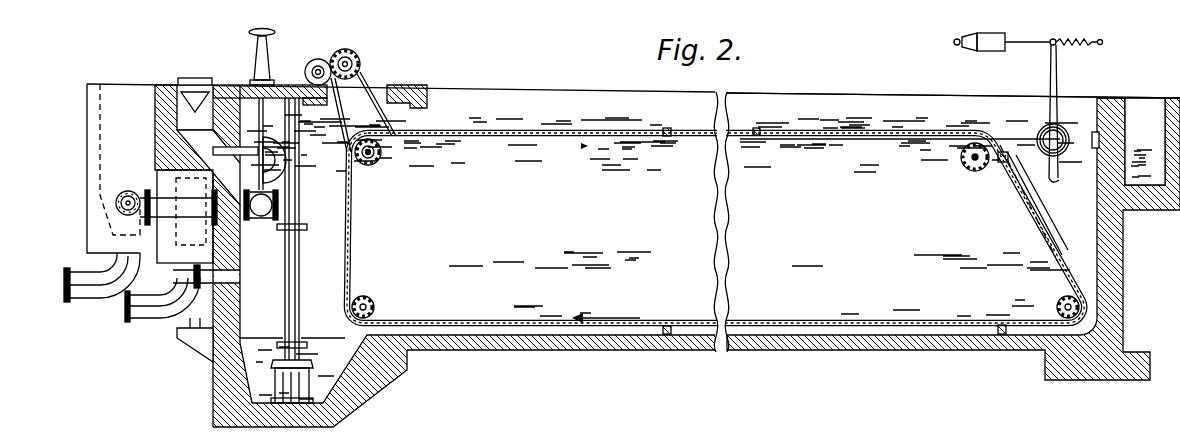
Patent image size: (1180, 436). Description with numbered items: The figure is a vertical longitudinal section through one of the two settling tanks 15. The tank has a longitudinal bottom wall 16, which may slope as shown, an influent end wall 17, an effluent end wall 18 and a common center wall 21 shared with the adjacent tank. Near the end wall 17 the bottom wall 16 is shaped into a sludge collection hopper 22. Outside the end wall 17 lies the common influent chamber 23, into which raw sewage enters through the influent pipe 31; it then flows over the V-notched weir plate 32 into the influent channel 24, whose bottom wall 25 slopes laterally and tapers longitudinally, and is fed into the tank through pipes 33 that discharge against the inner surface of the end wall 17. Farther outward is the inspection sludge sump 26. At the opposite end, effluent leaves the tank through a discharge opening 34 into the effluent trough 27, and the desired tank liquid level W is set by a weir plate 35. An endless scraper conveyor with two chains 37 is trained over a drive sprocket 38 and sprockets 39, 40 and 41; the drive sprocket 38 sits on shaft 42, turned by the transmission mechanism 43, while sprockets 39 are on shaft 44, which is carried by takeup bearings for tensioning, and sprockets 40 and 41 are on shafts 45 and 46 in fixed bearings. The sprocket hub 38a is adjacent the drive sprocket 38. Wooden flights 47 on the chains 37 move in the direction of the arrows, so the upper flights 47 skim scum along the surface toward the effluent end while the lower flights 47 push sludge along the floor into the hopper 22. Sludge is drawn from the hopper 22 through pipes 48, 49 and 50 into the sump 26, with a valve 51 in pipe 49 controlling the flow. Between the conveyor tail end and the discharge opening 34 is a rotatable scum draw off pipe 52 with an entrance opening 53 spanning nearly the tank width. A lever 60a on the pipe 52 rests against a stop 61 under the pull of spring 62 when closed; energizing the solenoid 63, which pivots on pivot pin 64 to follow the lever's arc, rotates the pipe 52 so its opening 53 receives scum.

The settling tank 15 is at (785, 226).
The bottom wall 16 is at (624, 352).
The end wall 17 is at (240, 255).
The end wall 18 is at (1125, 262).
The center wall 21 is at (818, 93).
The sludge collection hopper 22 is at (357, 386).
The influent chamber 23 is at (173, 236).
The influent channel 24 is at (160, 108).
The bottom wall of influent channel 25 is at (177, 133).
The inspection sludge sump 26 is at (92, 133).
The effluent trough 27 is at (1143, 115).
The influent pipe 31 is at (160, 318).
The V-notched weir plate 32 is at (167, 88).
The pipe 33 is at (252, 142).
The discharge opening 34 is at (1127, 133).
The weir plate 35 is at (1095, 148).
The chain 37 is at (850, 142).
The drive sprocket 38 is at (385, 155).
The sprocket shaft 38a is at (428, 147).
The sprocket 39 is at (973, 162).
The sprocket 40 is at (1057, 305).
The sprocket 41 is at (373, 306).
The shaft 42 is at (369, 158).
The transmission mechanism 43 is at (362, 56).
The shaft 44 is at (985, 166).
The shaft 45 is at (1062, 285).
The shaft 46 is at (378, 310).
The wooden flight 47 is at (666, 130).
The pipe 48 is at (302, 320).
The pipe 49 is at (188, 202).
The pipe 50 is at (128, 197).
The valve 51 is at (270, 221).
The scum draw off pipe 52 is at (1038, 140).
The opening 53 is at (1066, 132).
The lever 60a is at (1050, 78).
The stop 61 is at (1058, 60).
The spring 62 is at (1094, 42).
The solenoid 63 is at (990, 52).
The pivot pin 64 is at (957, 39).
The tank liquid level W is at (897, 131).